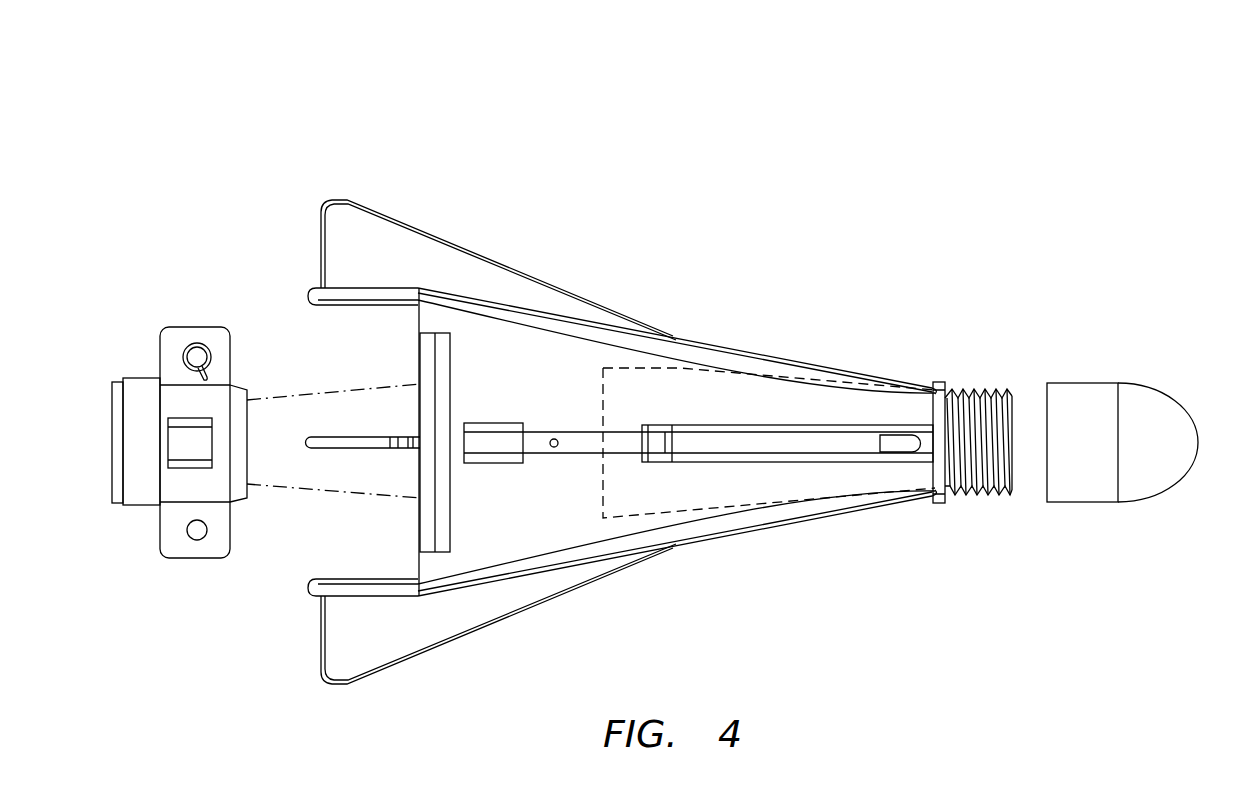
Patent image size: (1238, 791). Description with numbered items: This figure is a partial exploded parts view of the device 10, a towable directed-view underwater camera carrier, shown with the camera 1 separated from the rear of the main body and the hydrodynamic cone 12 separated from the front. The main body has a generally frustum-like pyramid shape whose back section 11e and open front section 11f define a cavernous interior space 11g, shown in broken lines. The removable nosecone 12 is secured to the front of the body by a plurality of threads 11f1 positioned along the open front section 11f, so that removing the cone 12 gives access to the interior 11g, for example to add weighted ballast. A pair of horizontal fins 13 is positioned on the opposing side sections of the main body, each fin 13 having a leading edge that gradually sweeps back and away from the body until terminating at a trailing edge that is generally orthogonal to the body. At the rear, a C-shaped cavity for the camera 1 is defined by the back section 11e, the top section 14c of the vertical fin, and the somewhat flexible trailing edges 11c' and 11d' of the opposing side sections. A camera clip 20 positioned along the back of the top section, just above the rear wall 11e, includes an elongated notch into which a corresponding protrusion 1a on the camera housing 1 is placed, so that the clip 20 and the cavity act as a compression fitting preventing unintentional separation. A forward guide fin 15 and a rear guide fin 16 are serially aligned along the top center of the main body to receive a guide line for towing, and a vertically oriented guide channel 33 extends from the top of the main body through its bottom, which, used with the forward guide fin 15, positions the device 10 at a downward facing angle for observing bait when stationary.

The device 10 is at (604, 128).
The camera 1 is at (172, 345).
The protrusion 1a is at (247, 398).
The top section 14c is at (321, 450).
The back section 11e is at (420, 402).
The trailing edge of side section 11d 11d' is at (348, 334).
The trailing edge of side section 11c 11c' is at (363, 554).
The horizontal fins 13 is at (402, 270).
The camera clip 20 is at (437, 368).
The cavernous interior space 11g is at (680, 370).
The rear guide fin 16 is at (500, 445).
The vertical guide channel 33 is at (556, 450).
The forward guide fin 15 is at (796, 437).
The open front section 11f is at (943, 497).
The threads 11f1 is at (1007, 390).
The hydrodynamic cone 12 is at (1136, 452).